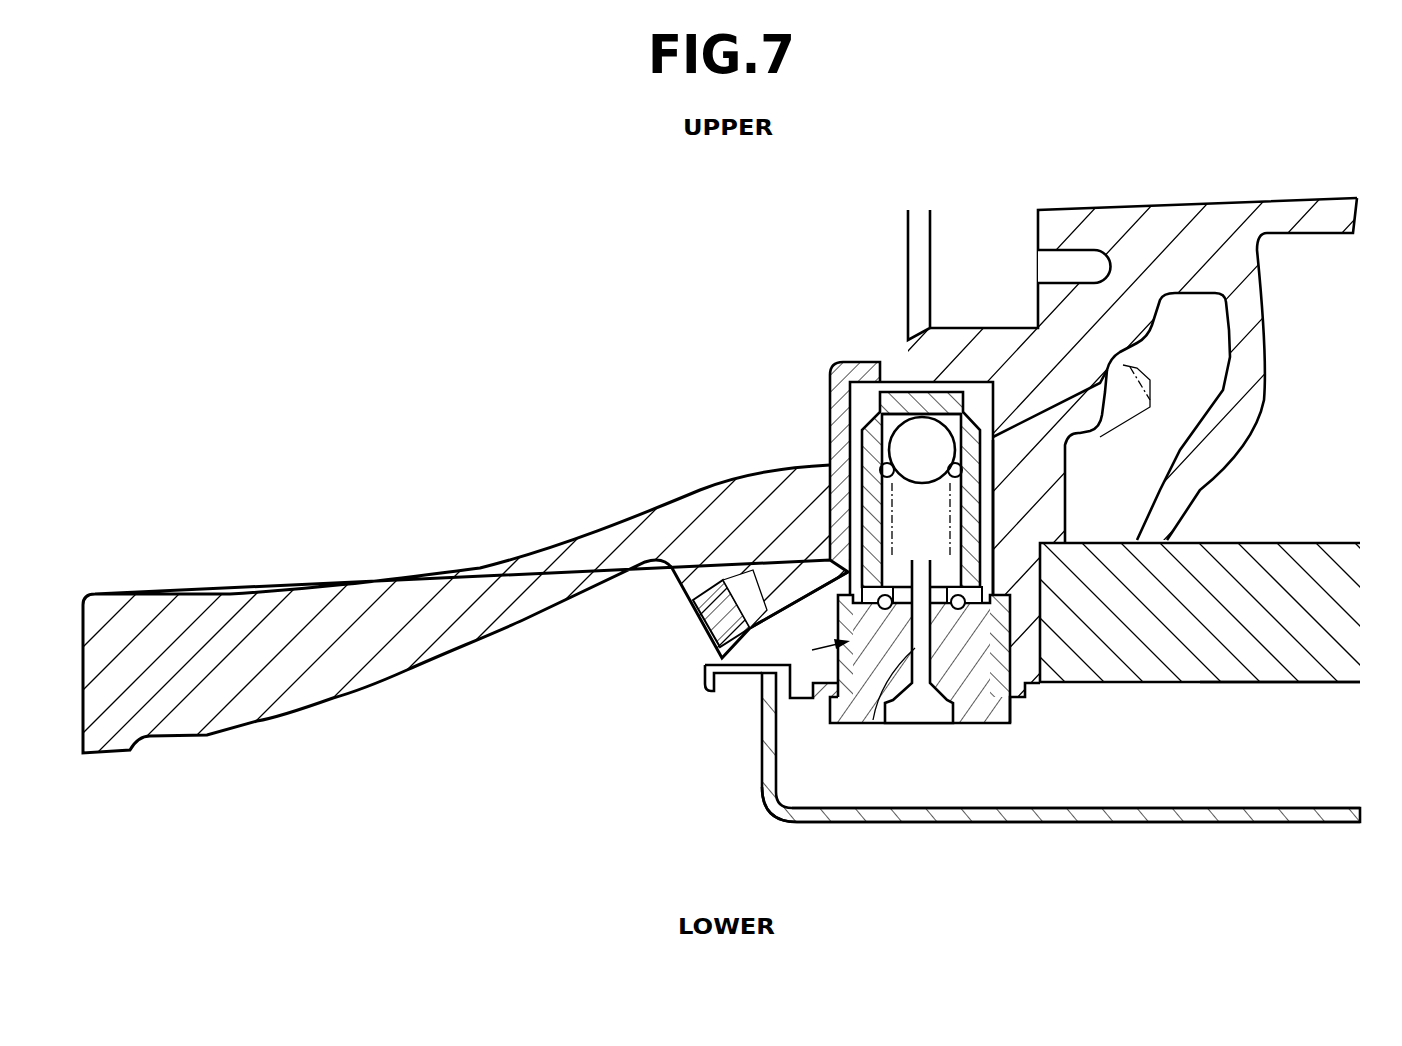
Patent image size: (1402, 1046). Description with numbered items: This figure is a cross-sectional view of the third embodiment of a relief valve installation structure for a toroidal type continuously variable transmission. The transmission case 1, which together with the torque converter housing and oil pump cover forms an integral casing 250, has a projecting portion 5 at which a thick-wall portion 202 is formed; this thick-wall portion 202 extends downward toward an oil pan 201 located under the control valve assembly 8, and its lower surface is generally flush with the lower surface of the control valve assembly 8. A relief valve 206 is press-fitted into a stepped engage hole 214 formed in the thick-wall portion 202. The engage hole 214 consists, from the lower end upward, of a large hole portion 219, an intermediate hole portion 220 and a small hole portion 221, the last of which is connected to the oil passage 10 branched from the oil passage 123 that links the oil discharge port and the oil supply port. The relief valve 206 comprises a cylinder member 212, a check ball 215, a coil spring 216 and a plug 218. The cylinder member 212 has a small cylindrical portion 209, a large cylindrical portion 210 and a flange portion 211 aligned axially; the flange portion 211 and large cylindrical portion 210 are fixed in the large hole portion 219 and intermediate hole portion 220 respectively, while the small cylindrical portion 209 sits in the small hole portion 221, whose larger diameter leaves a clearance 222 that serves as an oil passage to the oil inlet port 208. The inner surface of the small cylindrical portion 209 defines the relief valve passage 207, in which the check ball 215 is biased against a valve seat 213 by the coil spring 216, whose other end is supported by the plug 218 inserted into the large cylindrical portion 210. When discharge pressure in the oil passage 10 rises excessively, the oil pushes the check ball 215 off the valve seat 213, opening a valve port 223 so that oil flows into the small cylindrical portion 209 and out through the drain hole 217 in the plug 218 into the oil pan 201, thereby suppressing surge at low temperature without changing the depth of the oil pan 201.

The integral casing 250 is at (480, 558).
The transmission case 1 is at (742, 490).
The projecting portion 5 is at (480, 558).
The small hole portion 221 is at (845, 548).
The large cylindrical portion 210 is at (722, 658).
The oil passage 10 is at (1083, 410).
The oil passage 123 is at (1207, 367).
The clearance 222 is at (1000, 373).
The valve port 223 is at (927, 405).
The thick-wall portion 202 is at (1043, 600).
The control valve assembly 8 is at (1302, 663).
The engage hole 214 is at (990, 660).
The check ball 215 is at (853, 358).
The small cylindrical portion 209 is at (828, 383).
The relief valve 206 is at (832, 437).
The valve seat 213 is at (975, 380).
The relief valve passage 207 is at (848, 452).
The coil spring 216 is at (888, 393).
The oil inlet port 208 is at (907, 430).
The plug 218 is at (953, 673).
The drain hole 217 is at (848, 645).
The large hole portion 219 is at (972, 640).
The cylinder member 212 is at (760, 668).
The flange portion 211 is at (762, 752).
The intermediate hole portion 220 is at (782, 790).
The oil pan 201 is at (988, 824).